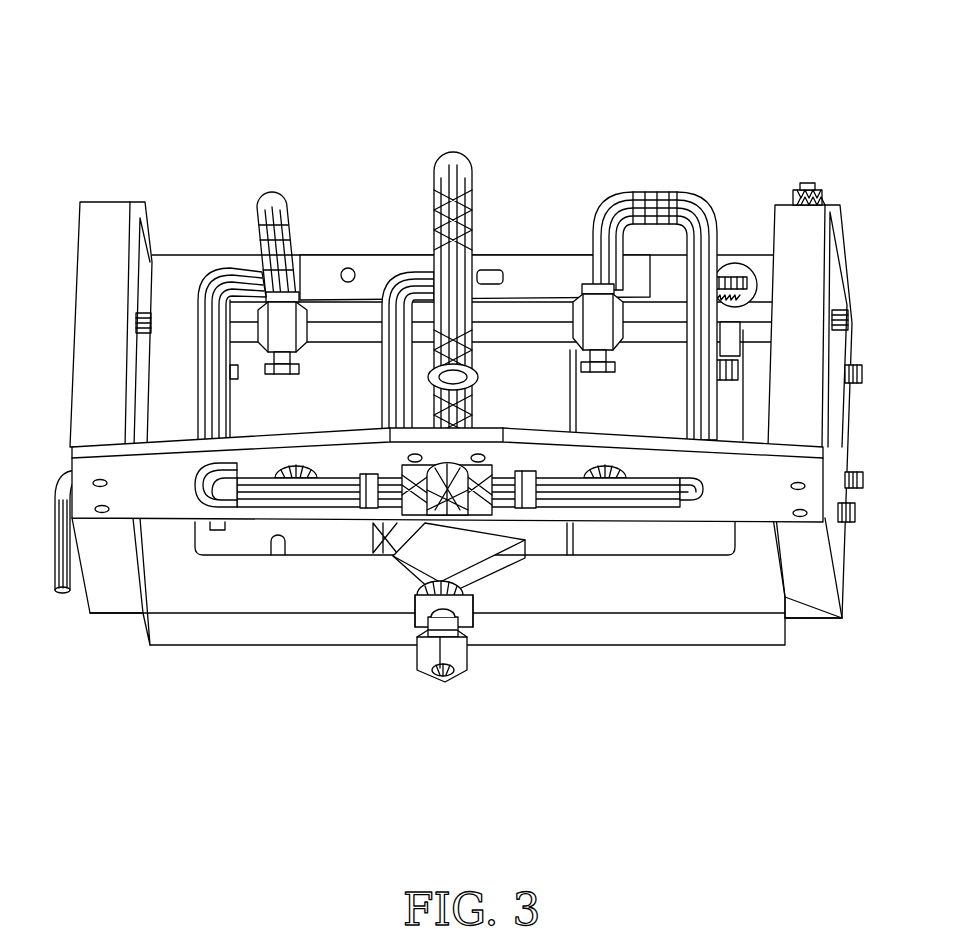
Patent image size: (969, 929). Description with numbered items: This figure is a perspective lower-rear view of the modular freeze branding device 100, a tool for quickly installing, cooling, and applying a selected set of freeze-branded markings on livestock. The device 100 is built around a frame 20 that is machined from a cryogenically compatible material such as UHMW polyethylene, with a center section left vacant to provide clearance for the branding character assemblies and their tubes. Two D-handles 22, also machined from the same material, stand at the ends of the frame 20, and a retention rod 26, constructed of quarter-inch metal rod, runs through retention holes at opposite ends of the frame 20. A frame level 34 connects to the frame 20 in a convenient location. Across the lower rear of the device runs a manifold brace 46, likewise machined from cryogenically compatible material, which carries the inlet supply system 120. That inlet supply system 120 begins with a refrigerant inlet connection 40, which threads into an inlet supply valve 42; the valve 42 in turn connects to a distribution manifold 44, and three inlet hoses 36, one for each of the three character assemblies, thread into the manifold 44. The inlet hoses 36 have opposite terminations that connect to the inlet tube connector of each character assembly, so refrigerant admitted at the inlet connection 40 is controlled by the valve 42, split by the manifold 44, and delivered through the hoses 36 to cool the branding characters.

The freeze branding device 100 is at (445, 410).
The inlet supply system 120 is at (722, 80).
The D-handles 22 is at (121, 200).
The frame 20 is at (204, 255).
The inlet hoses 36 is at (263, 203).
The frame level 34 is at (372, 252).
The manifold brace 46 is at (757, 507).
The retention rod 26 is at (50, 578).
The distribution manifold 44 is at (420, 517).
The inlet supply valve 42 is at (483, 590).
The refrigerant inlet connection 40 is at (430, 682).